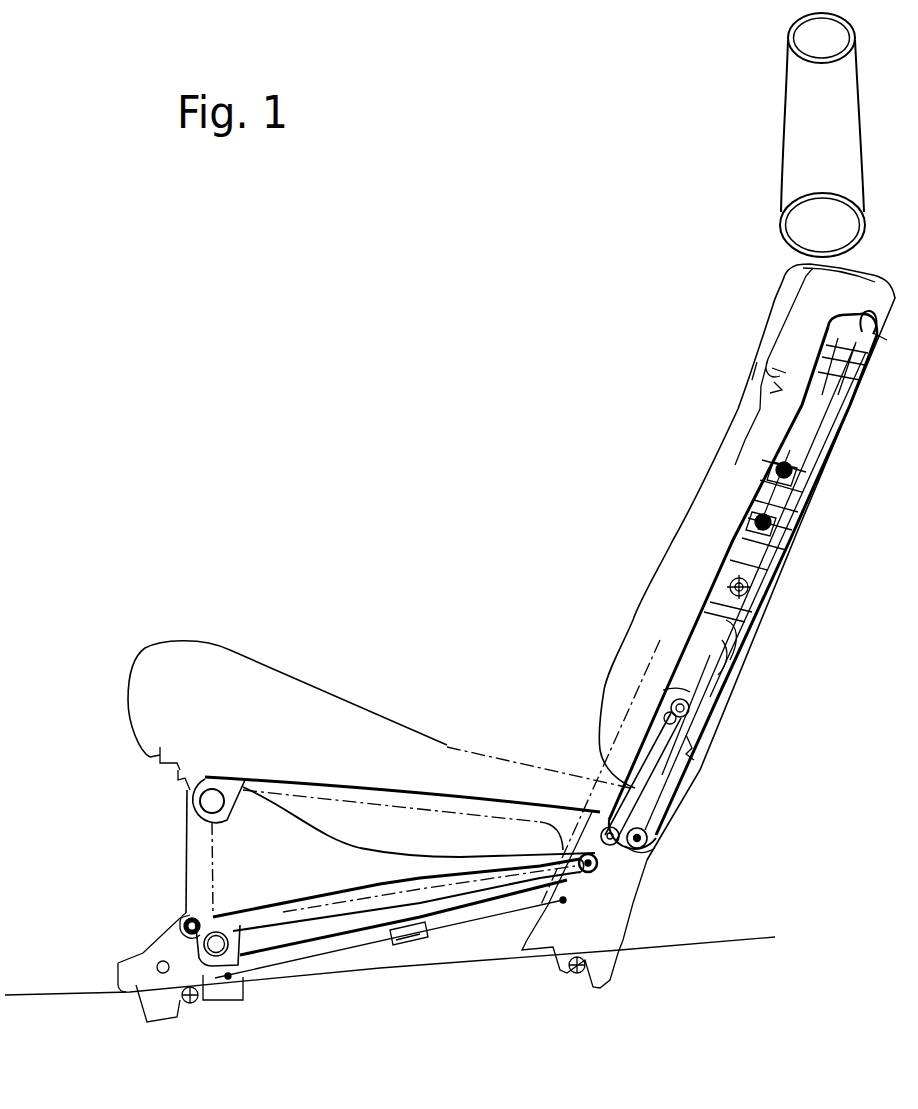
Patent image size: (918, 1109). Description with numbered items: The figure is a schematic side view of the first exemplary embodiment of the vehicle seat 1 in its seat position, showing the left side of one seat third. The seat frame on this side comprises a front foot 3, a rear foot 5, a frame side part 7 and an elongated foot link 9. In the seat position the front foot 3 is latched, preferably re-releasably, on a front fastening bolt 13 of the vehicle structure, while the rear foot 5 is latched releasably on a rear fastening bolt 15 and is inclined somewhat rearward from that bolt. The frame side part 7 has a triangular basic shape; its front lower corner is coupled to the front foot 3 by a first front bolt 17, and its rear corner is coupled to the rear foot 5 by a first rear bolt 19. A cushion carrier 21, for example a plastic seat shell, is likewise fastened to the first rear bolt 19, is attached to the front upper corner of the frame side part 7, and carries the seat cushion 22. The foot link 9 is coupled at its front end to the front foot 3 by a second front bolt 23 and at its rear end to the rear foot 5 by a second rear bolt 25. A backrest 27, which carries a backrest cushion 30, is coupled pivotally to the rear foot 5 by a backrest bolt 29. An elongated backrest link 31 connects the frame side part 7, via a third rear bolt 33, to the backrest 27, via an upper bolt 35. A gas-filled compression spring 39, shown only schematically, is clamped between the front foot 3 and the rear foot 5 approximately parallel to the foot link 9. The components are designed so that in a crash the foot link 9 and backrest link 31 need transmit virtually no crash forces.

The vehicle seat 1 is at (433, 528).
The front foot 3 is at (160, 1005).
The rear foot 5 is at (608, 928).
The frame side part 7 is at (200, 845).
The foot link 9 is at (283, 913).
The front fastening bolt 13 is at (195, 1003).
The rear fastening bolt 15 is at (580, 975).
The first front bolt 17 is at (200, 948).
The first rear bolt 19 is at (652, 842).
The cushion carrier 21 is at (180, 777).
The seat cushion 22 is at (278, 692).
The second front bolt 23 is at (188, 920).
The second rear bolt 25 is at (608, 866).
The backrest 27 is at (748, 547).
The backrest bolt 29 is at (690, 710).
The backrest cushion 30 is at (718, 490).
The backrest link 31 is at (692, 754).
The third rear bolt 33 is at (602, 826).
The upper bolt 35 is at (647, 720).
The gas-filled compression spring 39 is at (413, 935).